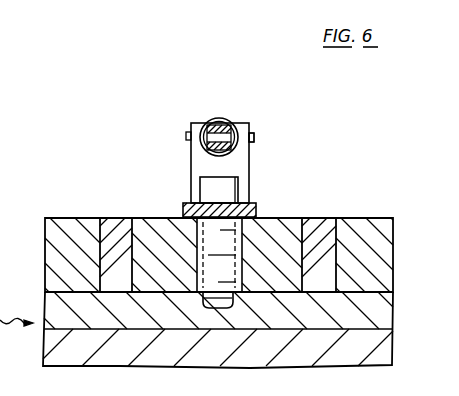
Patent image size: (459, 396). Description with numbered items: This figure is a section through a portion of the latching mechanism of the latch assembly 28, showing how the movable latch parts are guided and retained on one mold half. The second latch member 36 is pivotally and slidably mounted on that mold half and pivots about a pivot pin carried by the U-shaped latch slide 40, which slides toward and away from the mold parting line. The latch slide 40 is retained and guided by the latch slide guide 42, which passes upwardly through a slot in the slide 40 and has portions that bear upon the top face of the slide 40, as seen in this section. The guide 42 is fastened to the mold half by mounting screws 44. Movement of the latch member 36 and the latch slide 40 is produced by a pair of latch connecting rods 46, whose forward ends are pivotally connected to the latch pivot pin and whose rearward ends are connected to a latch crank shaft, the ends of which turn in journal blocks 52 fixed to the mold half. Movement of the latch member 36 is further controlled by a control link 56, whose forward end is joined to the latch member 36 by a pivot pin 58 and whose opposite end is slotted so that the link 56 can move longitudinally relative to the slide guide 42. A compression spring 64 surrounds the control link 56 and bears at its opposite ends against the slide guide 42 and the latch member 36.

The latch assembly 28 is at (310, 161).
The second latch member 36 is at (188, 154).
The latch slide 40 is at (285, 222).
The latch slide guide 42 is at (186, 208).
The mounting screws 44 is at (200, 187).
The latch connecting rods 46 is at (122, 222).
The journal blocks 52 is at (67, 223).
The control link 56 is at (226, 121).
The pivot pin 58 is at (256, 137).
The compression spring 64 is at (214, 120).